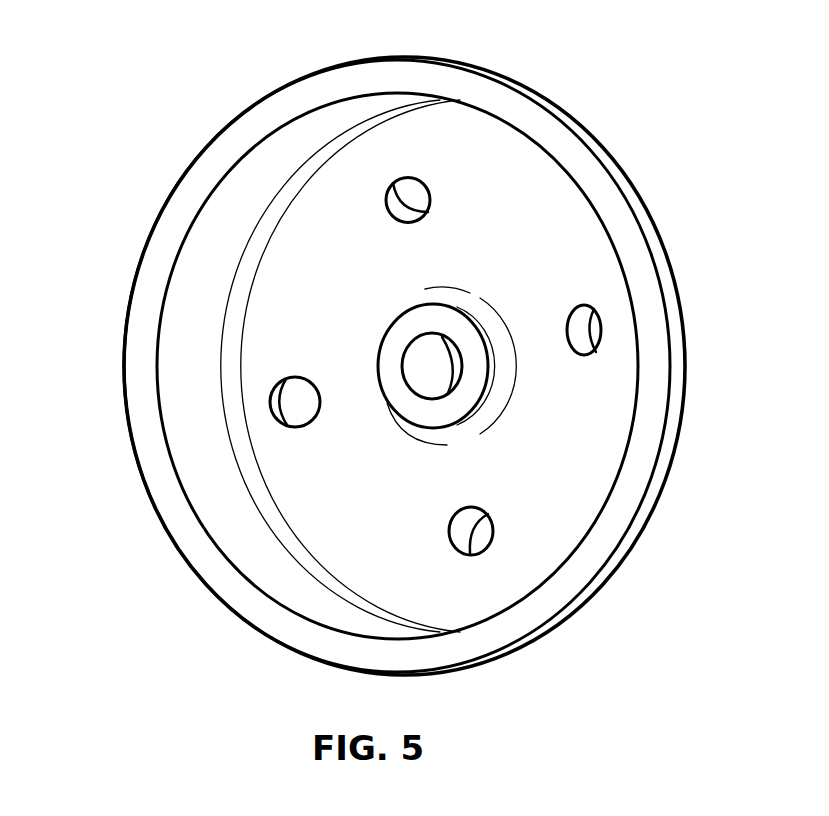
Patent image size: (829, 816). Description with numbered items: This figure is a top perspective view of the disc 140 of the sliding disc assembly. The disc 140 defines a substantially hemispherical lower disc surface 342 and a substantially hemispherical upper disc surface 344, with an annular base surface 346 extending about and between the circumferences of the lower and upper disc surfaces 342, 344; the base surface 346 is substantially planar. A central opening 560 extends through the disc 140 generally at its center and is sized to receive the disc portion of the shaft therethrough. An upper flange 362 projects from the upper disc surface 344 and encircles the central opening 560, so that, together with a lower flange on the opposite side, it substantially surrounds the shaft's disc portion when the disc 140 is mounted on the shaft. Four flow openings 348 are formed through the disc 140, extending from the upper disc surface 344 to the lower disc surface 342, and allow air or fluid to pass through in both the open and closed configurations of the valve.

The disc 140 is at (113, 97).
The lower disc surface 342 is at (677, 381).
The upper disc surface 344 is at (548, 222).
The annular base surface 346 is at (620, 518).
The flow openings 348 is at (593, 323).
The upper flange 362 is at (397, 322).
The central opening 560 is at (437, 362).